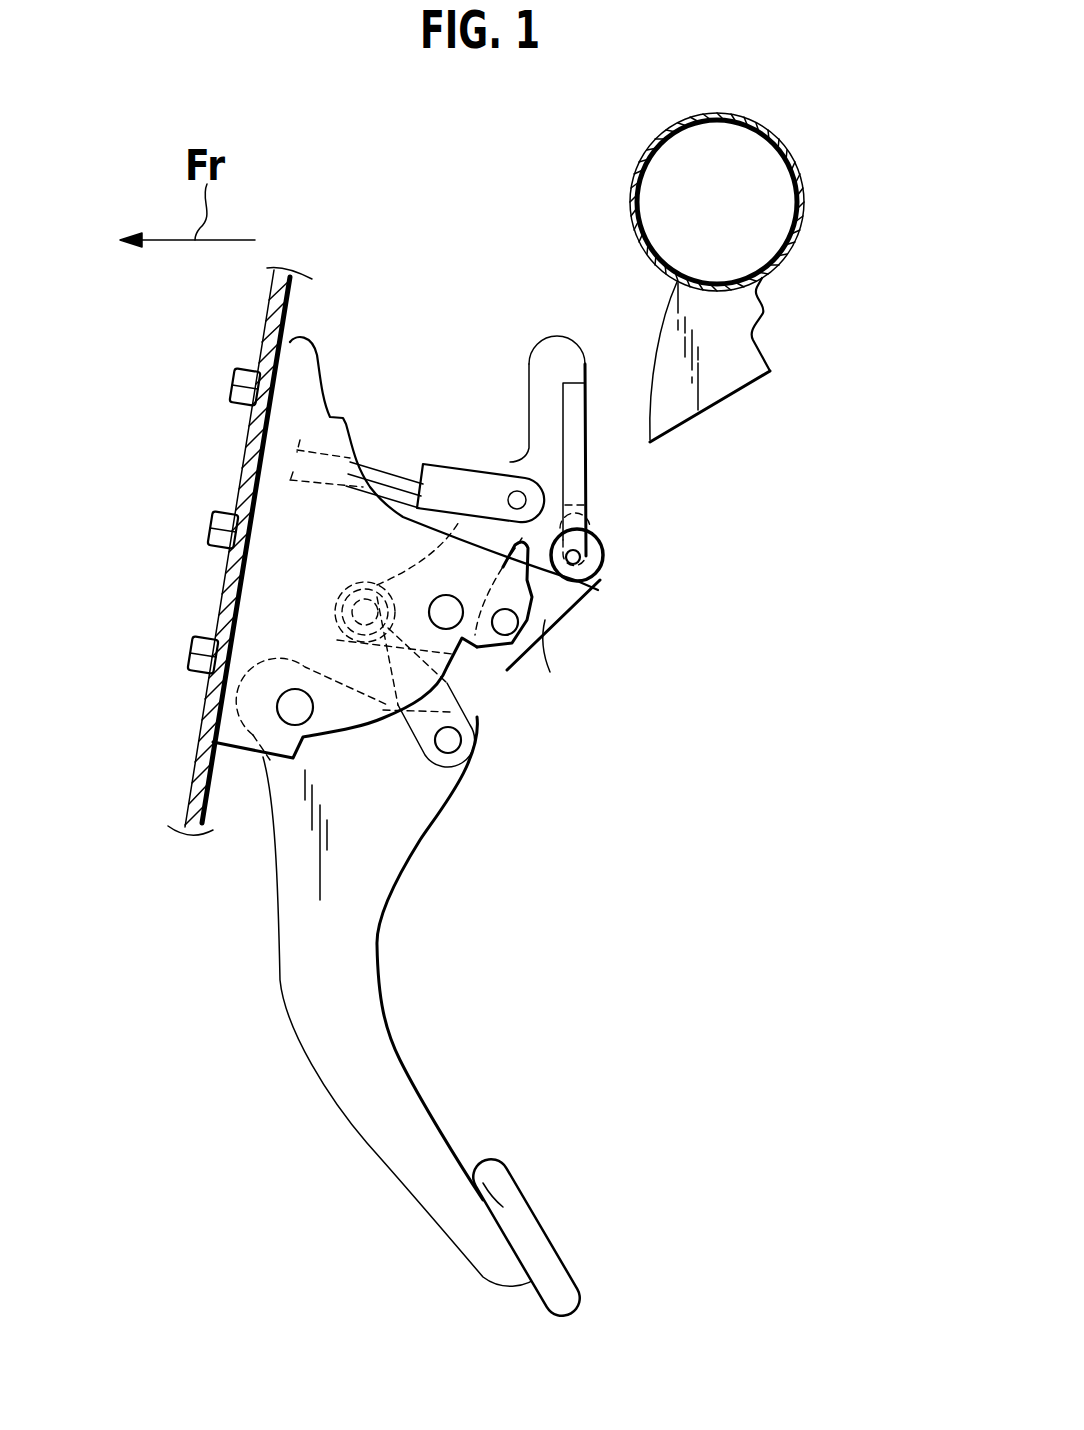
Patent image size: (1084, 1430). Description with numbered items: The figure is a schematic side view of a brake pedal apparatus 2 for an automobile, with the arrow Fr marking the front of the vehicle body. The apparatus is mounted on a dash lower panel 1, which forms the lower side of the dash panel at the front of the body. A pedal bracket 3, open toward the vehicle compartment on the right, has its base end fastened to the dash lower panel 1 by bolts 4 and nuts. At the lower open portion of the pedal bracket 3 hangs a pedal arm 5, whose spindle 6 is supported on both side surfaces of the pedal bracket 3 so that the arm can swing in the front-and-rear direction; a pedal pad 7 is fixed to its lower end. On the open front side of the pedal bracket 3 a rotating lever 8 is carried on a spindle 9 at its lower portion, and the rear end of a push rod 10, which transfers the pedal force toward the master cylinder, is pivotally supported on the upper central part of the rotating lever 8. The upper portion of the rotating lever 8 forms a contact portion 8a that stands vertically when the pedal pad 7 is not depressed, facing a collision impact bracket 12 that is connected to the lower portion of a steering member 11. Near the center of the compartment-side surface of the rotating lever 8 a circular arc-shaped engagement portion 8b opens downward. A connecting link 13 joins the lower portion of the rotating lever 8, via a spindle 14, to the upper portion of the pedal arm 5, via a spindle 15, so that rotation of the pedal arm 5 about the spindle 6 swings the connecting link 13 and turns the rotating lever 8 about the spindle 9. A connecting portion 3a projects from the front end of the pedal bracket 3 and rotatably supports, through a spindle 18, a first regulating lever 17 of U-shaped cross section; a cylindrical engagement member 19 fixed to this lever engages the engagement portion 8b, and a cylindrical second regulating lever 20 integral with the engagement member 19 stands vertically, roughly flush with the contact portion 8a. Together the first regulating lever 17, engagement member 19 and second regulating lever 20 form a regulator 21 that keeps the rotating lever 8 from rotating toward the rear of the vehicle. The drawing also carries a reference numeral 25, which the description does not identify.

The dash lower panel 1 is at (207, 748).
The brake pedal apparatus 2 is at (444, 306).
The pedal bracket 3 is at (323, 386).
The connecting portion 3a is at (540, 640).
The bolts 4 is at (244, 373).
The pedal arm 5 is at (281, 962).
The spindle 6 is at (295, 710).
The pedal pad 7 is at (540, 1200).
The rotating lever 8 is at (540, 360).
The contact portion 8a is at (590, 364).
The engagement portion 8b is at (583, 594).
The spindle 9 is at (447, 618).
The push rod 10 is at (456, 466).
The steering member 11 is at (805, 203).
The collision impact bracket 12 is at (632, 433).
The connecting link 13 is at (403, 725).
The spindle 14 is at (350, 617).
The spindle 15 is at (452, 746).
The first regulating lever 17 is at (606, 553).
The spindle 18 is at (505, 628).
The engagement member 19 is at (612, 580).
The second regulating lever 20 is at (572, 505).
The regulator 21 is at (643, 629).
The gap / clearance 25 is at (613, 408).